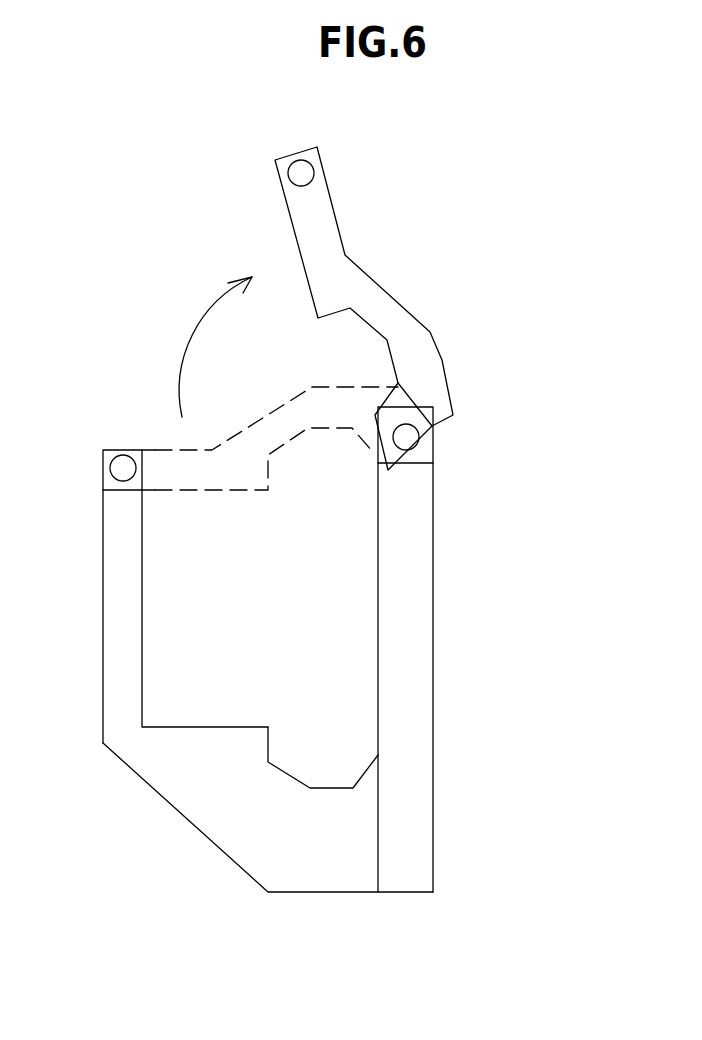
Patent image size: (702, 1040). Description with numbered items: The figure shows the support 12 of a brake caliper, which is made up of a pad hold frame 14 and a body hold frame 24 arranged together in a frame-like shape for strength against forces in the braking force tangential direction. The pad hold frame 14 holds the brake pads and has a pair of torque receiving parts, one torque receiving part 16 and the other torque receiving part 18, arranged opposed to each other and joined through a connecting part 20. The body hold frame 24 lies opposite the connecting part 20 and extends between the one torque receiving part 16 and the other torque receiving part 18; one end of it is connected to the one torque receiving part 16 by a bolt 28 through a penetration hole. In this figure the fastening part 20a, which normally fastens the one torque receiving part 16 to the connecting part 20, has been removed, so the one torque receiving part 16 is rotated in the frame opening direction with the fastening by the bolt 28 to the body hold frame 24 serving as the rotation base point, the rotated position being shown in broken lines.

The support 12 is at (472, 617).
The pad hold frame 14 is at (100, 672).
The one torque receiving part 16 is at (328, 255).
The other torque receiving part 18 is at (200, 802).
The connecting part 20 is at (115, 562).
The fastening part 20a is at (121, 467).
The body hold frame 24 is at (415, 698).
The bolt 28 is at (406, 437).